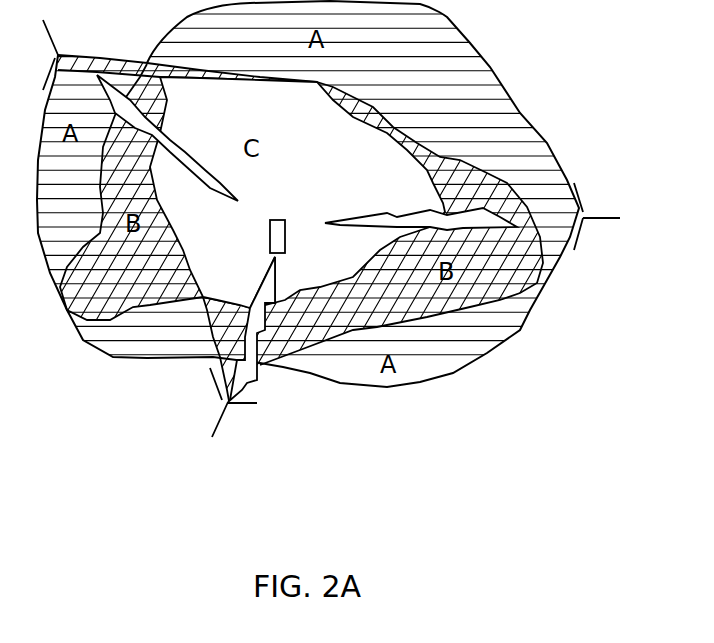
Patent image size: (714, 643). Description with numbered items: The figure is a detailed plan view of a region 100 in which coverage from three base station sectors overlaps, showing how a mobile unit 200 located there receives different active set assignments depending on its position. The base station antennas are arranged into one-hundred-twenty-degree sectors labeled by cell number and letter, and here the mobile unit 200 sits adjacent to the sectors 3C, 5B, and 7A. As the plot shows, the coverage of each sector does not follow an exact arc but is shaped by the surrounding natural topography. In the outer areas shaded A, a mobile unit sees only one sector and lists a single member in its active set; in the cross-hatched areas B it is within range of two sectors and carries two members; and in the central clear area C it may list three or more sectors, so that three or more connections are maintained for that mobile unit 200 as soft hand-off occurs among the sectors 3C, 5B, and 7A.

The region 100 is at (492, 67).
The mobile unit 200 is at (279, 220).
The base station sector 3C is at (71, 54).
The base station sector 5B is at (599, 216).
The base station sector 7A is at (236, 405).